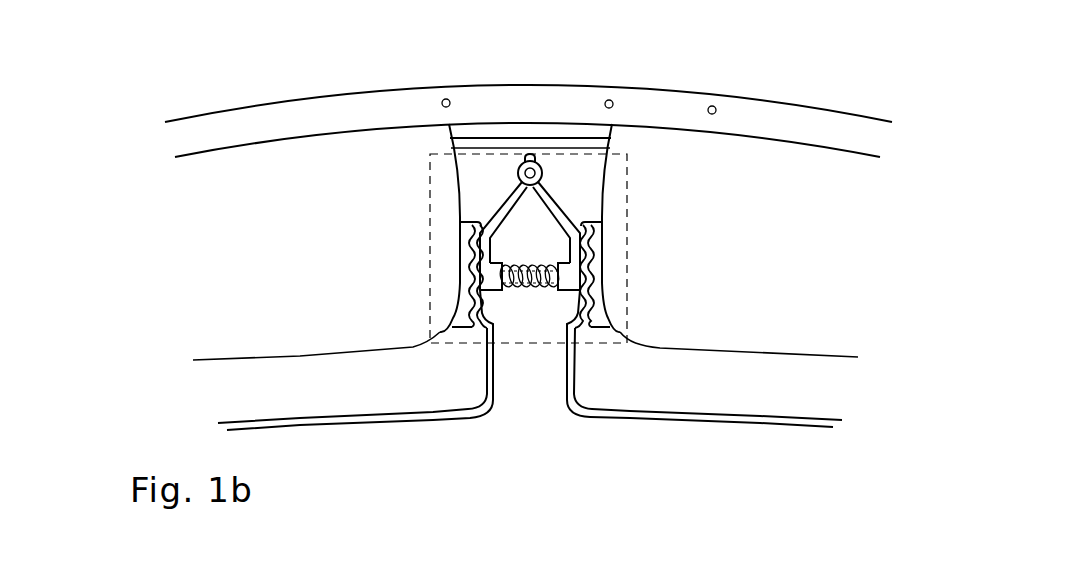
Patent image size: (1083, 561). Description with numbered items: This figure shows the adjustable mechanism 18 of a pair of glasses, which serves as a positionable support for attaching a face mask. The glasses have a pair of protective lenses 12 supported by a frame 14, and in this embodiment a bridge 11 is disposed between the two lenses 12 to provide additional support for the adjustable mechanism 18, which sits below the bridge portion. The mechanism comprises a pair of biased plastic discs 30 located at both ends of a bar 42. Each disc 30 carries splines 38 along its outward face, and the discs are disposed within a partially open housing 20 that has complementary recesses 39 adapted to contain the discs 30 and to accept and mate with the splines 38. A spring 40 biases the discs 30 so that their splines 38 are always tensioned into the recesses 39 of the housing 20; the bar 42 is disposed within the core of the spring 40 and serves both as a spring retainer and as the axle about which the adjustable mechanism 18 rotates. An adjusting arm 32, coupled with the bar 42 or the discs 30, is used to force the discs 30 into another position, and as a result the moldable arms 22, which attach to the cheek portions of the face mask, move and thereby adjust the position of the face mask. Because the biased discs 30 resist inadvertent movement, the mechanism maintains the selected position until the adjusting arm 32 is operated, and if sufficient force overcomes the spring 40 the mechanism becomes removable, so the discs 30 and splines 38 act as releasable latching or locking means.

The bridge 11 is at (465, 147).
The protective lenses 12 is at (308, 180).
The frame 14 is at (817, 125).
The adjustable mechanism 18 is at (431, 178).
The housing 20 is at (458, 228).
The moldable arms 22 is at (302, 421).
The biased plastic discs 30 is at (483, 282).
The adjusting arm 32 is at (537, 163).
The splines 38 is at (470, 235).
The recesses 39 is at (470, 260).
The spring 40 is at (529, 290).
The bar 42 is at (519, 290).